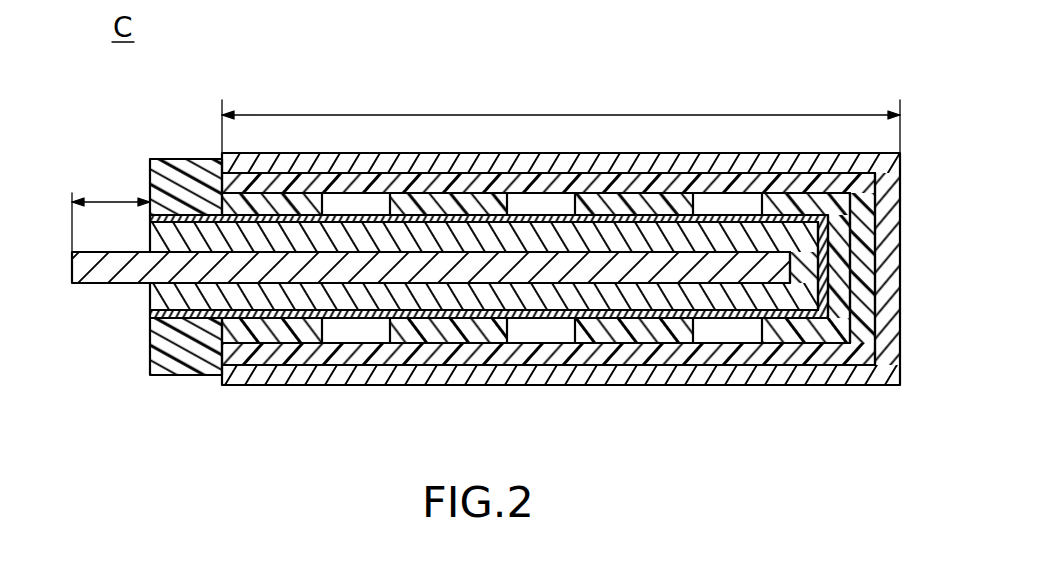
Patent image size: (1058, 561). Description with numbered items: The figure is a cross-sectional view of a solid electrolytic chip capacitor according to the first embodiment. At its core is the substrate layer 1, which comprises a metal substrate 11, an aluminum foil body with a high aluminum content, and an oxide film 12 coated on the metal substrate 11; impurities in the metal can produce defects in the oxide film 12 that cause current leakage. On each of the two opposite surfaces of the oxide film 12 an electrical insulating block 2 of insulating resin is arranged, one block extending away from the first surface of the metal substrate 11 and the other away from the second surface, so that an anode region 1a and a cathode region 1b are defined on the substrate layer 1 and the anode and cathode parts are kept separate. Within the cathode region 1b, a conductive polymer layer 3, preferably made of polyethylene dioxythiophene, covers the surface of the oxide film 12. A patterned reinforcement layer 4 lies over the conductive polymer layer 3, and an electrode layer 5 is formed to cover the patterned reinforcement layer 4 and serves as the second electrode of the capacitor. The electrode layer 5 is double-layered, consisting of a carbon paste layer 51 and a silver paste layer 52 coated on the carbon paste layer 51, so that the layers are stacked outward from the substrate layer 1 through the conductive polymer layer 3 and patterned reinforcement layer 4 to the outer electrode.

The substrate layer 1 is at (110, 375).
The metal substrate 11 is at (117, 277).
The oxide film 12 is at (167, 295).
The electrical insulating block 2 is at (185, 350).
The conductive polymer layer 3 is at (360, 315).
The patterned reinforcement layer 4 is at (633, 345).
The electrode layer 5 is at (728, 66).
The carbon paste layer 51 is at (634, 166).
The silver paste layer 52 is at (700, 165).
The anode region 1a is at (111, 205).
The cathode region 1b is at (561, 119).